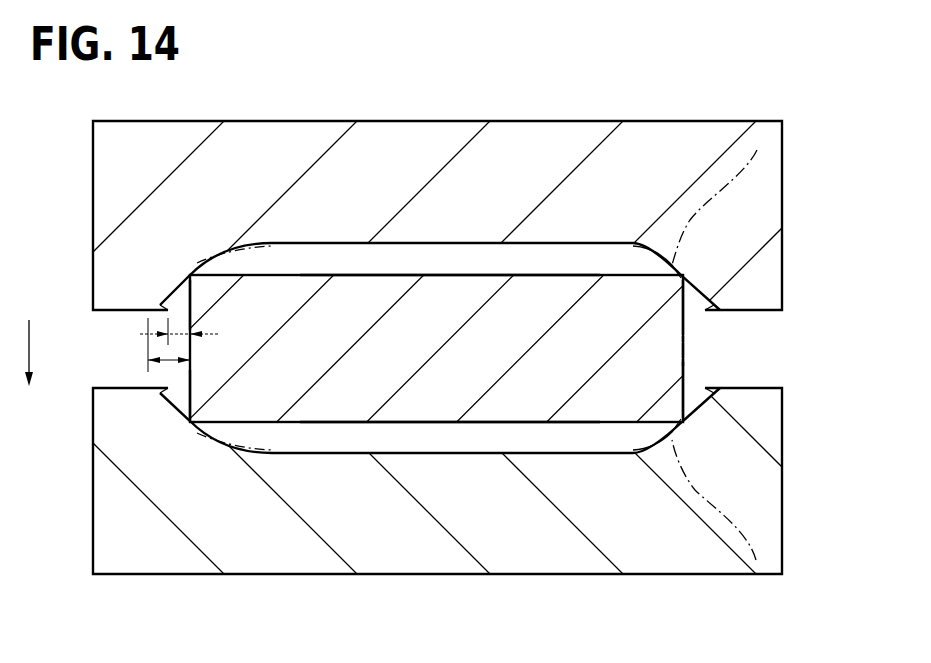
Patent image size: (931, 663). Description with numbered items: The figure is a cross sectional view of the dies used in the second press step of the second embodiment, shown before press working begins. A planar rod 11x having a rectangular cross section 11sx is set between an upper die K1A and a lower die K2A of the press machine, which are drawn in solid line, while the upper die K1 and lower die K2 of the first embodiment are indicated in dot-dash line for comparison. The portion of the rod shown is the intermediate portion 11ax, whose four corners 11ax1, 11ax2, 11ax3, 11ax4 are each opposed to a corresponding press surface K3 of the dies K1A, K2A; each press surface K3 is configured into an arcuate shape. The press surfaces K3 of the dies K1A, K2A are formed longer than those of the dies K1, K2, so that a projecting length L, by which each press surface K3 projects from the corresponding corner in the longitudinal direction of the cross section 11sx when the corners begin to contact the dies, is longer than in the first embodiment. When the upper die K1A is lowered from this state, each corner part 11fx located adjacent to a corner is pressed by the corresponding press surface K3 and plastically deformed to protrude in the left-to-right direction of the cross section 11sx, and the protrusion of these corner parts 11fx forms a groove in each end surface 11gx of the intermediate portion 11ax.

The corner 11ax3 is at (189, 280).
The planar rod 11x is at (353, 314).
The intermediate portion 11ax is at (435, 297).
The press surface K3 is at (643, 247).
The upper die K1 is at (757, 150).
The corner 11ax1 is at (685, 338).
The upper die K1A is at (782, 216).
The corner part 11fx is at (686, 339).
The end surface 11gx is at (686, 350).
The lower die K2A is at (782, 482).
The corner 11ax2 is at (685, 360).
The lower die K2 is at (756, 560).
The rectangular cross section 11sx is at (436, 405).
The corner 11ax4 is at (190, 423).
The projecting length L is at (178, 334).